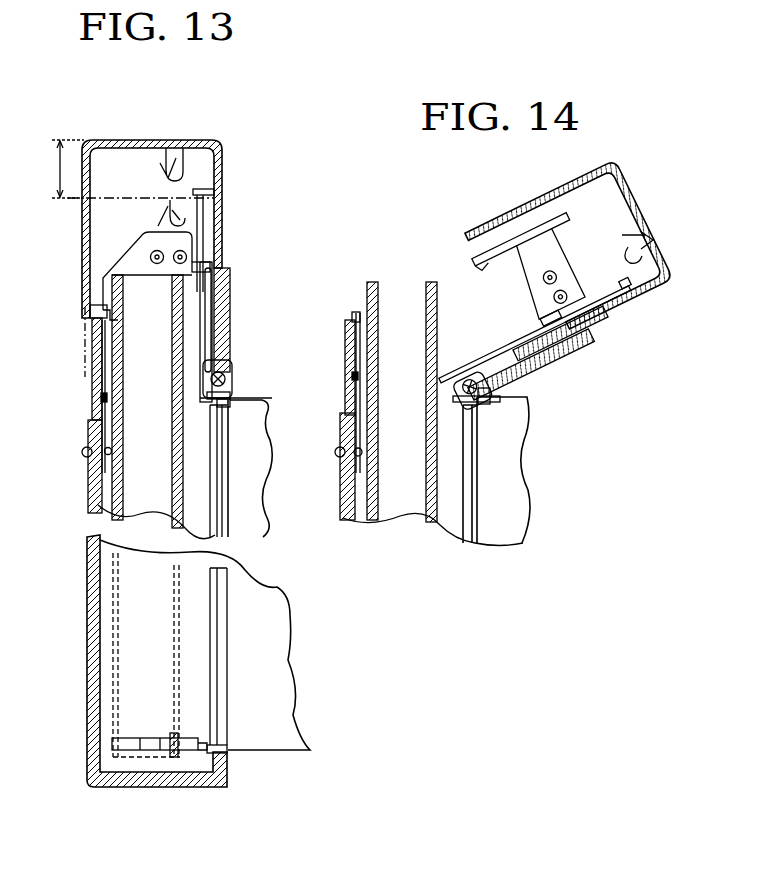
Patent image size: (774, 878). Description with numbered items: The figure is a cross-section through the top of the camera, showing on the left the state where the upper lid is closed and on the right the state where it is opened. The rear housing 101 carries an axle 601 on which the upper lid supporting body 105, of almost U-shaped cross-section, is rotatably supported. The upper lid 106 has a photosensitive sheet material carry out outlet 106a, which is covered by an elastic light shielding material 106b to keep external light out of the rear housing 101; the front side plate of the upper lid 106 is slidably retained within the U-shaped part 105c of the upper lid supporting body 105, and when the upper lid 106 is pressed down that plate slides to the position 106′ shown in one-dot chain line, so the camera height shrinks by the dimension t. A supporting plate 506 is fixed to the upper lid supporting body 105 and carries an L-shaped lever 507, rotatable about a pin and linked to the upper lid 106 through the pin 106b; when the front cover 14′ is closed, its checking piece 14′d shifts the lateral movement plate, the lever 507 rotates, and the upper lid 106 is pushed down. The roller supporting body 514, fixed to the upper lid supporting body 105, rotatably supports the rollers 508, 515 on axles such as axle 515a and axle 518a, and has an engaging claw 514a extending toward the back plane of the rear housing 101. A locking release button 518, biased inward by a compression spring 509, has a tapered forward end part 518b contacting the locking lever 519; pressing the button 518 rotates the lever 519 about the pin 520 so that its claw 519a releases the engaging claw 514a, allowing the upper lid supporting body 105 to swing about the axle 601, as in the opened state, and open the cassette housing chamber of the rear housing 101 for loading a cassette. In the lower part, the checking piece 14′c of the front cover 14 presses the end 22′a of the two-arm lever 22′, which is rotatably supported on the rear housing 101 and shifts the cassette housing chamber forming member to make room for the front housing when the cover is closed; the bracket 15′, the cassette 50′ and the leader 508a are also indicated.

In FIG. 13, the front cover 14 is at (292, 660).
In FIG. 13, the front cover 14′ is at (263, 502).
In FIG. 14, the front cover 14′ is at (523, 490).
In FIG. 13, the checking piece 14′c is at (212, 758).
In FIG. 13, the checking piece 14′d is at (219, 410).
In FIG. 13, the bracket 15′ is at (240, 402).
In FIG. 14, the bracket 15′ is at (500, 401).
In FIG. 13, the two-arm lever 22′ is at (146, 738).
In FIG. 13, the other end of two-arm lever 22′a is at (175, 758).
In FIG. 13, the column 50′ is at (160, 439).
In FIG. 14, the column 50′ is at (415, 354).
In FIG. 13, the rear housing 101 is at (88, 496).
In FIG. 13, the upper lid supporting body 105 is at (276, 384).
In FIG. 14, the upper lid supporting body 105 is at (565, 346).
In FIG. 13, the U-shaped part 105c is at (226, 312).
In FIG. 13, the upper lid 106 is at (134, 140).
In FIG. 14, the upper lid 106 is at (675, 194).
In FIG. 13, the shifted position of front plate 106′ is at (128, 197).
In FIG. 13, the photosensitive sheet material carry out outlet 106a is at (172, 146).
In FIG. 14, the photosensitive sheet material carry out outlet 106a is at (648, 242).
In FIG. 13, the light shielding material 106b is at (180, 172).
In FIG. 14, the light shielding material 106b is at (630, 262).
In FIG. 13, the supporting plate 506 is at (210, 292).
In FIG. 14, the supporting plate 506 is at (520, 371).
In FIG. 13, the L-shaped lever 507 is at (204, 203).
In FIG. 14, the L-shaped lever 507 is at (585, 323).
In FIG. 13, the roller 508 is at (156, 250).
In FIG. 14, the roller 508 is at (541, 279).
In FIG. 13, the hole portion 508a is at (156, 265).
In FIG. 13, the compression spring 509 is at (90, 440).
In FIG. 13, the roller supporting body 514 is at (148, 262).
In FIG. 14, the roller supporting body 514 is at (598, 219).
In FIG. 14, the engaging claw 514a is at (478, 259).
In FIG. 13, the roller 515 is at (187, 254).
In FIG. 14, the roller 515 is at (568, 295).
In FIG. 13, the axle 515a is at (178, 266).
In FIG. 13, the locking release button 518 is at (82, 450).
In FIG. 14, the locking release button 518 is at (335, 455).
In FIG. 13, the axle 518a is at (90, 462).
In FIG. 13, the forward end part 518b is at (110, 468).
In FIG. 14, the forward end part 518b is at (363, 455).
In FIG. 13, the locking lever 519 is at (96, 423).
In FIG. 14, the locking lever 519 is at (347, 342).
In FIG. 13, the claw 519a is at (96, 310).
In FIG. 14, the claw 519a is at (356, 315).
In FIG. 13, the pin 520 is at (100, 397).
In FIG. 14, the pin 520 is at (352, 373).
In FIG. 13, the axle 601 is at (211, 381).
In FIG. 14, the axle 601 is at (469, 379).